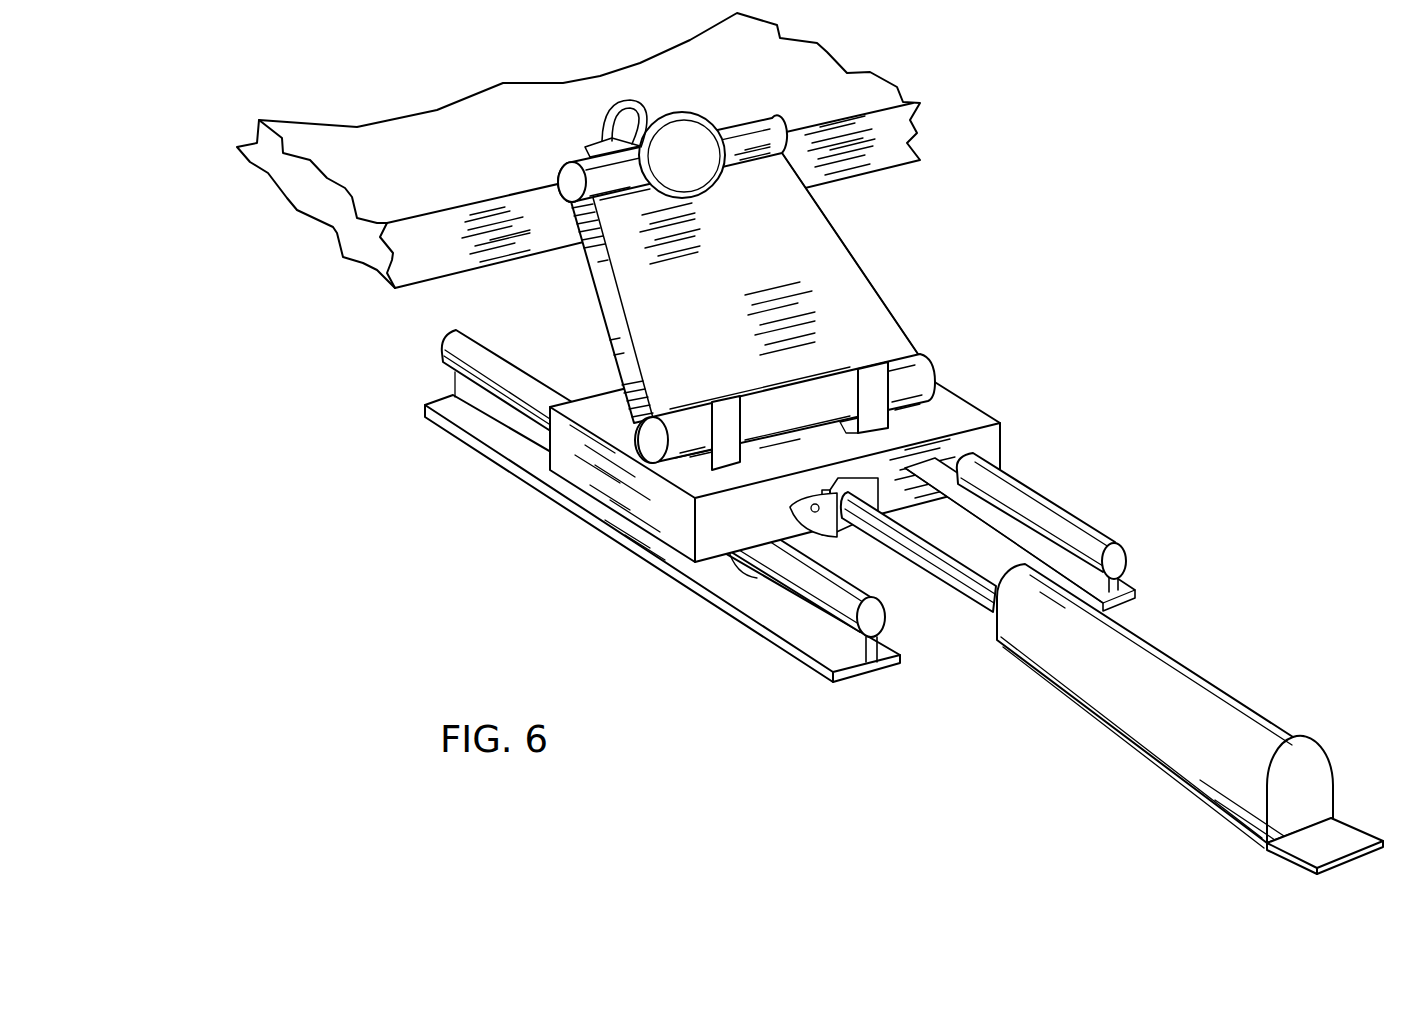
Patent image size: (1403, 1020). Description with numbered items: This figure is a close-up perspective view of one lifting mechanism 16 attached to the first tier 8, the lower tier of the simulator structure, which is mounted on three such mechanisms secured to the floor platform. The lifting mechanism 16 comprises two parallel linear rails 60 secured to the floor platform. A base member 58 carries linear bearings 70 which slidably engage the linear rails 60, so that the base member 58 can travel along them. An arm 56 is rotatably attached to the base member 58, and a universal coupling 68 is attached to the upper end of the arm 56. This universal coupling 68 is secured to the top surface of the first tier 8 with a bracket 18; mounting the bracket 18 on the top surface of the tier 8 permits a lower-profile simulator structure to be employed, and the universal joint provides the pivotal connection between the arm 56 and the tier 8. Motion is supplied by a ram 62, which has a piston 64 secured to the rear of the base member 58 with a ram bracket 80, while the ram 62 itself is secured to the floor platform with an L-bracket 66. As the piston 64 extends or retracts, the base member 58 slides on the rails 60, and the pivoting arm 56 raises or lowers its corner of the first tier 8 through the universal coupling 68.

The first tier 8 is at (917, 135).
The lifting mechanism 16 is at (860, 258).
The bracket 18 is at (593, 138).
The arm 56 is at (890, 312).
The base member 58 is at (977, 415).
The linear rail 60 is at (1127, 560).
The ram 62 is at (1177, 670).
The piston 64 is at (975, 612).
The L-bracket 66 is at (1352, 833).
The universal coupling 68 is at (673, 137).
The linear bearing 70 is at (745, 578).
The ram bracket 80 is at (823, 530).